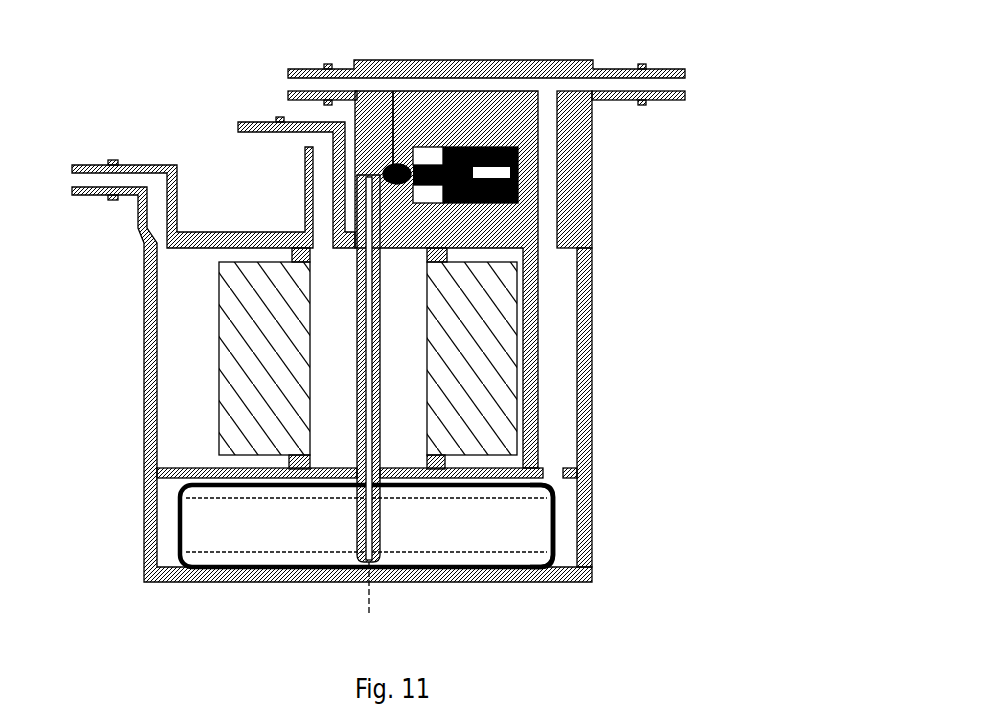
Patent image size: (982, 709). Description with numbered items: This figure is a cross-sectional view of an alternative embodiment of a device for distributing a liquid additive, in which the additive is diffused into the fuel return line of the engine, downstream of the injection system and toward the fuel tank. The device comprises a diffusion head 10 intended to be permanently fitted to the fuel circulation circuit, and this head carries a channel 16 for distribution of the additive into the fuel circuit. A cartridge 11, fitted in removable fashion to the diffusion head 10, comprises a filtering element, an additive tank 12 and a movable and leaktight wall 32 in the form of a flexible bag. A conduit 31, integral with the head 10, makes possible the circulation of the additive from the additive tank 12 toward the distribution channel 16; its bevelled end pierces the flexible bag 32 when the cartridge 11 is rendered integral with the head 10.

The diffusion head 10 is at (592, 177).
The cartridge 11 is at (592, 268).
The additive tank 12 is at (180, 528).
The distribution channel 16 is at (393, 107).
The conduit 31 is at (348, 297).
The movable and leaktight wall 32 is at (553, 528).